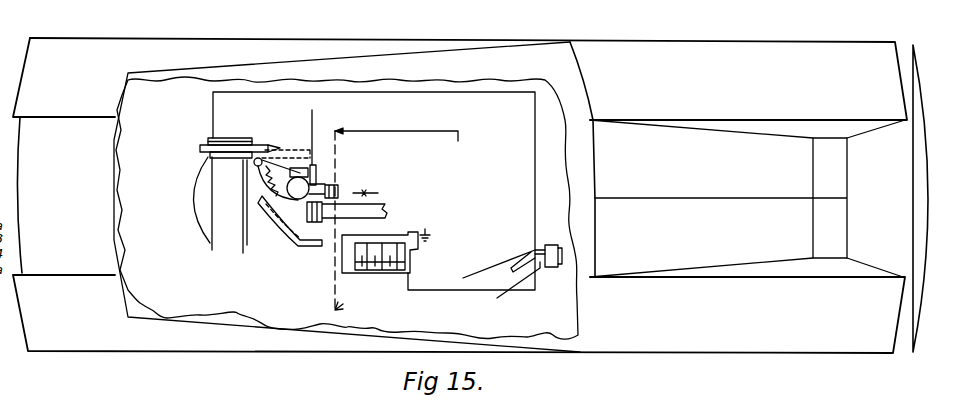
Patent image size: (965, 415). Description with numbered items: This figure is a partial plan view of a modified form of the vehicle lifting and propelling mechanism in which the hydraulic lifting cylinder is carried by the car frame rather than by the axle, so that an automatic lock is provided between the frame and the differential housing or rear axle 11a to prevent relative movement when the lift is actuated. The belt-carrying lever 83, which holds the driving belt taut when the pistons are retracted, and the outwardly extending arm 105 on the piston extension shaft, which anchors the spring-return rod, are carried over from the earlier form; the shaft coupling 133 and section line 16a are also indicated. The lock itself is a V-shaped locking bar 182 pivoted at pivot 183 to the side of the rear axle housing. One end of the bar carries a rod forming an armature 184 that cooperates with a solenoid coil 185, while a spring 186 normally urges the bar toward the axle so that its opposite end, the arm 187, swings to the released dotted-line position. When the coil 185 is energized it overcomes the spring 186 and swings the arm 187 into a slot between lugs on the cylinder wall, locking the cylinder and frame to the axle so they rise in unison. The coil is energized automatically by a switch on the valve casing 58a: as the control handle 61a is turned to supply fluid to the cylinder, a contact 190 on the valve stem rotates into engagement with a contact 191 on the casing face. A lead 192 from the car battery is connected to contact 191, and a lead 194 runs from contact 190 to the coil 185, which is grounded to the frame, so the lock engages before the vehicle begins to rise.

The rear axle 11a is at (220, 242).
The lever 83 is at (278, 222).
The outwardly extending arm 105 is at (318, 180).
The shaft coupling 133 is at (387, 218).
The section line 16a is at (404, 227).
The valve casing 58a is at (556, 270).
The control handle 61a is at (478, 286).
The V-shaped locking bar 182 is at (283, 150).
The pivot 183 is at (255, 163).
The armature 184 is at (200, 148).
The solenoid coil 185 is at (207, 139).
The spring 186 is at (267, 182).
The arm 187 is at (312, 110).
The contact 190 is at (498, 292).
The contact 191 is at (539, 283).
The lead 192 is at (422, 290).
The lead 194 is at (535, 151).